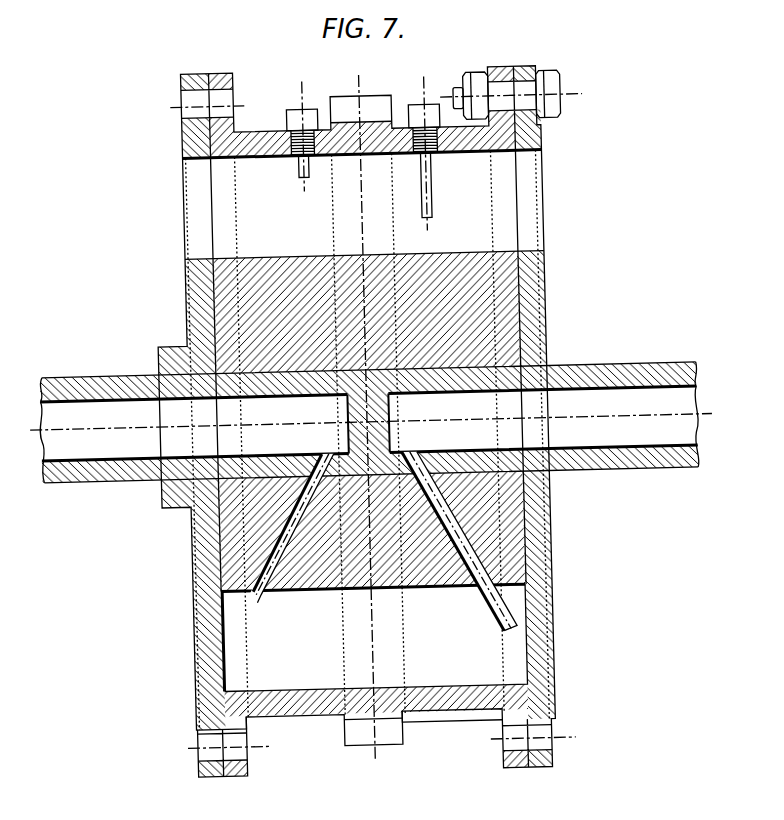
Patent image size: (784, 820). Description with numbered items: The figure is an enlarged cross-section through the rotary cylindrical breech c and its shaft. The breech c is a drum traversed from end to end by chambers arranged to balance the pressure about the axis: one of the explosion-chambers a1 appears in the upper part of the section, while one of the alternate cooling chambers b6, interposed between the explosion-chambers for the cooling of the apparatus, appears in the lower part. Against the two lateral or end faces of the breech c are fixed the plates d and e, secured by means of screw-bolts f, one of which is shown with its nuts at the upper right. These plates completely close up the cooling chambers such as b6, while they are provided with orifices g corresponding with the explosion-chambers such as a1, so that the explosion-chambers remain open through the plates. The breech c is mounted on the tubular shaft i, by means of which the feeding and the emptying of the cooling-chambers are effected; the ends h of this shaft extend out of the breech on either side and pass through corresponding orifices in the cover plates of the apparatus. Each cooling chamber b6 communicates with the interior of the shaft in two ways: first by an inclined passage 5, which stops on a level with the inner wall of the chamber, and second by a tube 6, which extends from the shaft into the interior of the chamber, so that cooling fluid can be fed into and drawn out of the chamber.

The explosion-chamber a1 is at (364, 421).
The cylindrical breech c is at (291, 281).
The shaft end h is at (81, 371).
The tubular shaft i is at (443, 369).
The cooling chamber b6 is at (374, 637).
The end plate d is at (200, 611).
The end plate e is at (536, 619).
The passage 5 is at (330, 439).
The tube 6 is at (404, 451).
The orifice g is at (564, 212).
The screw-bolt f is at (534, 97).